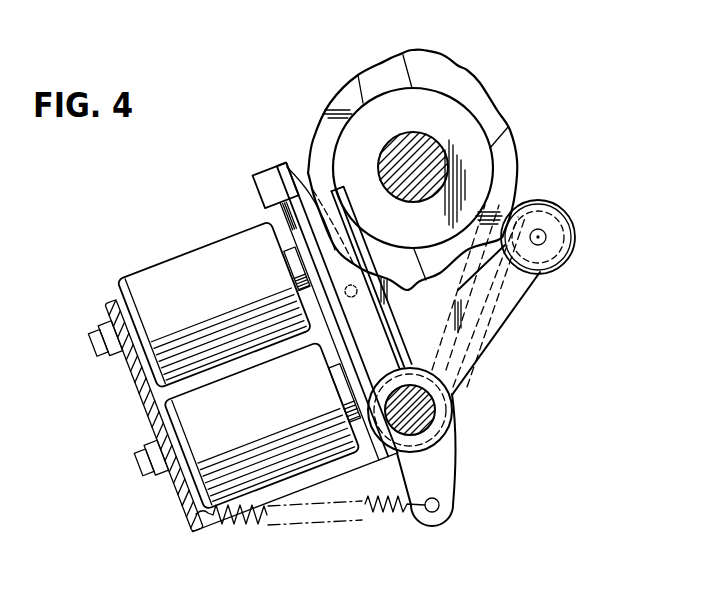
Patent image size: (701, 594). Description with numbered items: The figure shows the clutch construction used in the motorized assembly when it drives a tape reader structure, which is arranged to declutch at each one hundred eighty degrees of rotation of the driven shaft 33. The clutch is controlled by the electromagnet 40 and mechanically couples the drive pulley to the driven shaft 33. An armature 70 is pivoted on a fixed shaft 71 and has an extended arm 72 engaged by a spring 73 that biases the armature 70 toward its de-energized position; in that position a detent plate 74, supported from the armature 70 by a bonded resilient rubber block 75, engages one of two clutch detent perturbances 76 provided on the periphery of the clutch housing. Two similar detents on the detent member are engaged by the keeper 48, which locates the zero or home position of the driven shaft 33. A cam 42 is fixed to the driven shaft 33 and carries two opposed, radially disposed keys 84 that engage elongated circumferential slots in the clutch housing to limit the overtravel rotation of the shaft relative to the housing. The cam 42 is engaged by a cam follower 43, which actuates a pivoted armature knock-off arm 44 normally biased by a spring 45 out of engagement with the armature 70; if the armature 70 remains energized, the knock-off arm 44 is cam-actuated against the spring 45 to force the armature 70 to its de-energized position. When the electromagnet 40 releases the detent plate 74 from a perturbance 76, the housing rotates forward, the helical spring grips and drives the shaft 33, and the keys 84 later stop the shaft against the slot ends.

The driven shaft 33 is at (421, 136).
The electromagnet 40 is at (178, 412).
The cam 42 is at (445, 58).
The cam follower 43 is at (572, 222).
The armature knock-off arm 44 is at (262, 177).
The spring 45 is at (317, 343).
The keeper 48 is at (495, 305).
The armature 70 is at (283, 162).
The fixed shaft 71 is at (430, 412).
The extended arm 72 is at (445, 475).
The spring 73 is at (387, 511).
The detent plate 74 is at (381, 324).
The bonded resilient rubber block 75 is at (381, 347).
The clutch detent perturbance 76 is at (330, 187).
The keys 84 is at (368, 80).